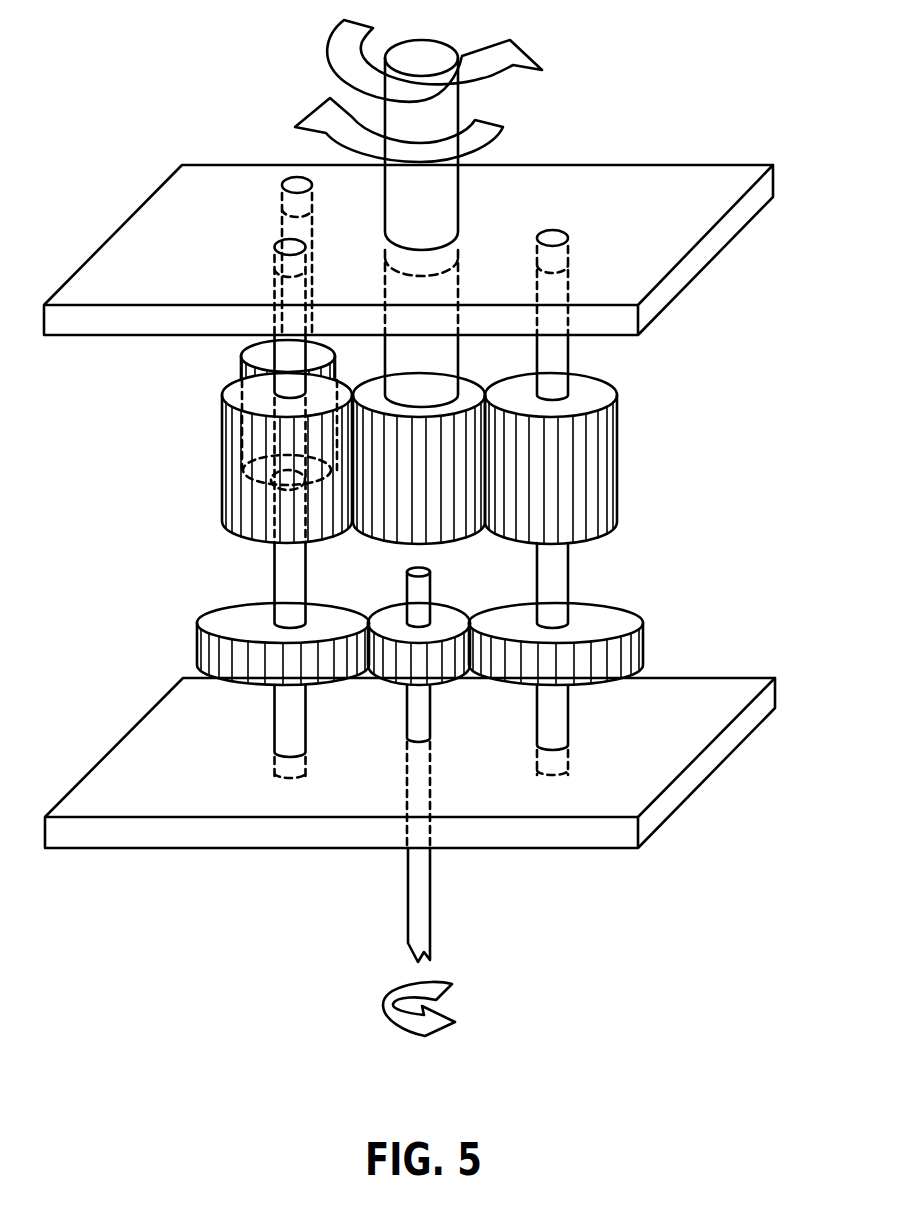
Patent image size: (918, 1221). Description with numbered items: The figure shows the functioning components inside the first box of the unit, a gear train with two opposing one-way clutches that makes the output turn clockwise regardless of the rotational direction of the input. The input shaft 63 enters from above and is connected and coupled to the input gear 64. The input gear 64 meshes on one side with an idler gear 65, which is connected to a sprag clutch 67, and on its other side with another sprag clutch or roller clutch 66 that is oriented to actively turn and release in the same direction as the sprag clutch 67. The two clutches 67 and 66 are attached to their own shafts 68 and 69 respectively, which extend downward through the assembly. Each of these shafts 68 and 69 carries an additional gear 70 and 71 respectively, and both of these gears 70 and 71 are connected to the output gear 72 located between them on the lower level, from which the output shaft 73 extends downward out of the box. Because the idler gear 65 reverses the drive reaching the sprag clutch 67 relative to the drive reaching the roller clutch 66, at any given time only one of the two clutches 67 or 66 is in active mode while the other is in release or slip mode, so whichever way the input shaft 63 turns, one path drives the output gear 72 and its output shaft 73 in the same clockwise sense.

The input shaft 63 is at (460, 118).
The input gear 64 is at (477, 380).
The idler gear 65 is at (222, 498).
The sprag clutch or roller clutch 66 is at (618, 488).
The sprag clutch 67 is at (247, 371).
The shaft 68 is at (268, 587).
The shaft 69 is at (568, 582).
The gear 70 is at (198, 653).
The gear 71 is at (642, 648).
The output gear 72 is at (447, 603).
The output shaft 73 is at (430, 900).